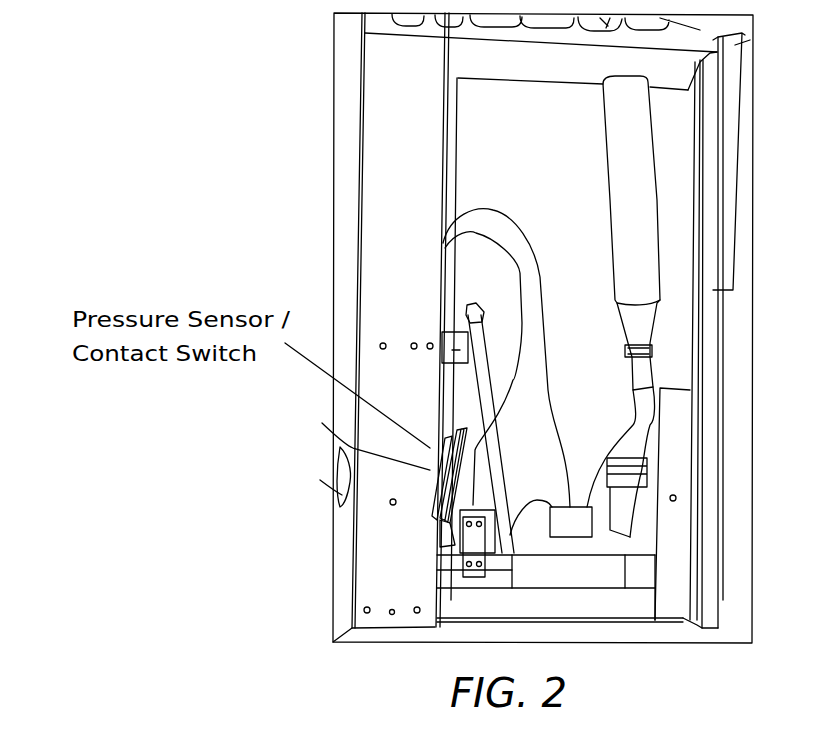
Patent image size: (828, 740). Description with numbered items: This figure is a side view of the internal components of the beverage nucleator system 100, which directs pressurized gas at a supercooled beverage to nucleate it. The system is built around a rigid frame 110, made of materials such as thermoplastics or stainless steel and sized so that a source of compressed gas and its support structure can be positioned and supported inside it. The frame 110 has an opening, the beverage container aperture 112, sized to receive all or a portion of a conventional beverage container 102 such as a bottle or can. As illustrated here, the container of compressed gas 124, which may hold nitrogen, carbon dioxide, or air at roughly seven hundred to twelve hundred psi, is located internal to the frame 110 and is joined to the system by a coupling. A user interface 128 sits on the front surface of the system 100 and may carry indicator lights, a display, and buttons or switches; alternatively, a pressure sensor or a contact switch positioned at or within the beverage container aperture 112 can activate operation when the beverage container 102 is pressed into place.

The beverage nucleator system 100 is at (265, 106).
The beverage container 102 is at (343, 495).
The frame 110 is at (735, 92).
The beverage container aperture 112 is at (433, 470).
The container of compressed gas 124 is at (630, 233).
The user interface 128 is at (353, 290).